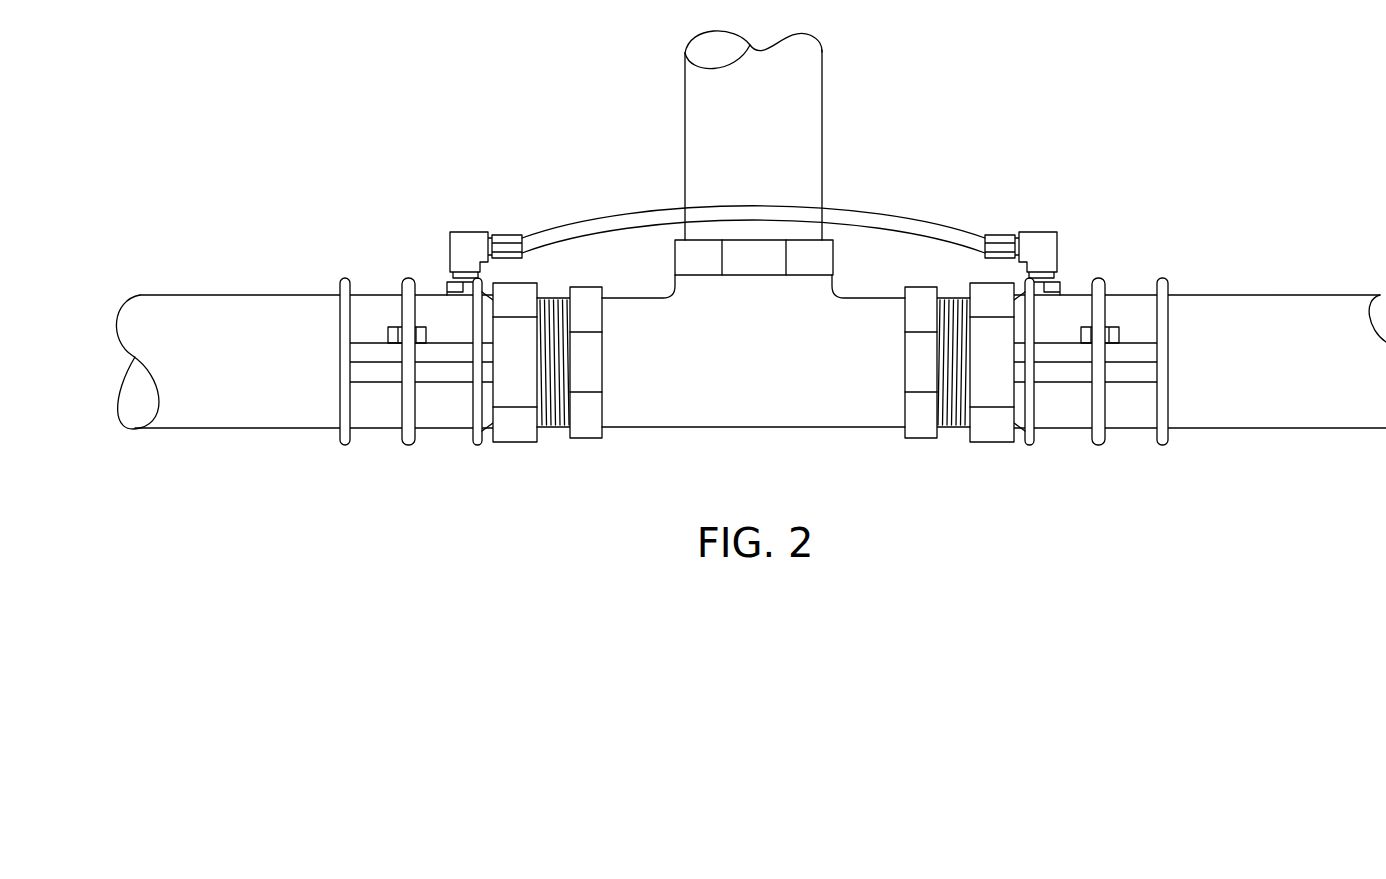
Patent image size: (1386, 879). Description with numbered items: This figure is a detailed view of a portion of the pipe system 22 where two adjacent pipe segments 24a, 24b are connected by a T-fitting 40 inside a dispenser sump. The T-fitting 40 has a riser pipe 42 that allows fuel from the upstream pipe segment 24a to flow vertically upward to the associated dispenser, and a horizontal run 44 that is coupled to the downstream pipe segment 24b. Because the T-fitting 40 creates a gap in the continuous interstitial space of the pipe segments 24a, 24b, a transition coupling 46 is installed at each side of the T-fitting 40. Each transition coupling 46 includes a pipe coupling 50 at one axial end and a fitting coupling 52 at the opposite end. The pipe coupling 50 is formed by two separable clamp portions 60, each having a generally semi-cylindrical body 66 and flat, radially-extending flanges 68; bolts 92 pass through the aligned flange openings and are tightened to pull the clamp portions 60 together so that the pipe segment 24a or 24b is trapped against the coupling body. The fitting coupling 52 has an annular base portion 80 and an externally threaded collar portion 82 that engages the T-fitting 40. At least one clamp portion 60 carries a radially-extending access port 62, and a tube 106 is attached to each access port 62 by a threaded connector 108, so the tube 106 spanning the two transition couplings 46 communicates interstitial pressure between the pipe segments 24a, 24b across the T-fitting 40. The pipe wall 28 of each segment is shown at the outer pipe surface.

The pipe system 22 is at (175, 430).
The pipe segment 24a is at (152, 296).
The pipe segment 24b is at (1358, 298).
The pipe wall 28 is at (212, 296).
The T-fitting 40 is at (652, 430).
The riser pipe 42 is at (822, 99).
The horizontal run 44 is at (852, 430).
The transition coupling 46 is at (353, 283).
The pipe coupling 50 is at (345, 473).
The fitting coupling 52 is at (563, 285).
The clamp portion 60 is at (396, 286).
The access port 62 is at (448, 283).
The semi-cylindrical body 66 is at (357, 320).
The flange 68 is at (347, 352).
The base portion 80 is at (514, 436).
The collar portion 82 is at (565, 355).
The bolt 92 is at (410, 340).
The tube 106 is at (838, 219).
The threaded connector 108 is at (470, 240).